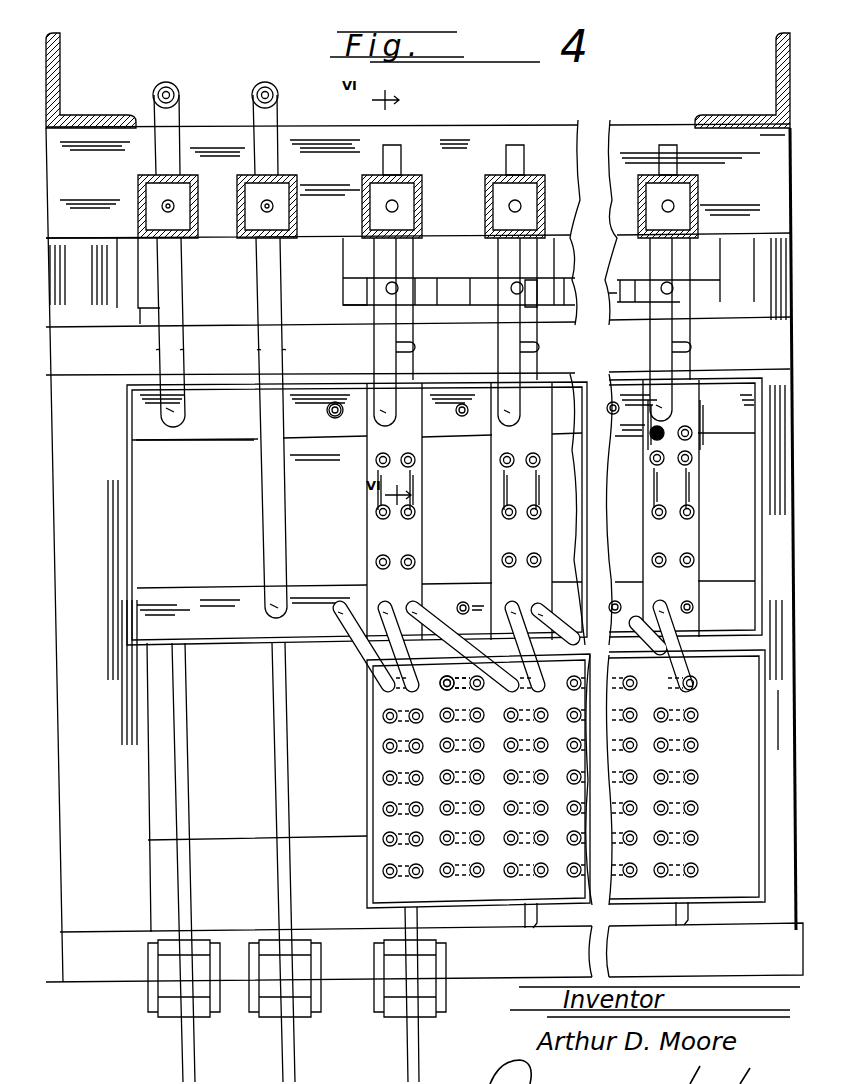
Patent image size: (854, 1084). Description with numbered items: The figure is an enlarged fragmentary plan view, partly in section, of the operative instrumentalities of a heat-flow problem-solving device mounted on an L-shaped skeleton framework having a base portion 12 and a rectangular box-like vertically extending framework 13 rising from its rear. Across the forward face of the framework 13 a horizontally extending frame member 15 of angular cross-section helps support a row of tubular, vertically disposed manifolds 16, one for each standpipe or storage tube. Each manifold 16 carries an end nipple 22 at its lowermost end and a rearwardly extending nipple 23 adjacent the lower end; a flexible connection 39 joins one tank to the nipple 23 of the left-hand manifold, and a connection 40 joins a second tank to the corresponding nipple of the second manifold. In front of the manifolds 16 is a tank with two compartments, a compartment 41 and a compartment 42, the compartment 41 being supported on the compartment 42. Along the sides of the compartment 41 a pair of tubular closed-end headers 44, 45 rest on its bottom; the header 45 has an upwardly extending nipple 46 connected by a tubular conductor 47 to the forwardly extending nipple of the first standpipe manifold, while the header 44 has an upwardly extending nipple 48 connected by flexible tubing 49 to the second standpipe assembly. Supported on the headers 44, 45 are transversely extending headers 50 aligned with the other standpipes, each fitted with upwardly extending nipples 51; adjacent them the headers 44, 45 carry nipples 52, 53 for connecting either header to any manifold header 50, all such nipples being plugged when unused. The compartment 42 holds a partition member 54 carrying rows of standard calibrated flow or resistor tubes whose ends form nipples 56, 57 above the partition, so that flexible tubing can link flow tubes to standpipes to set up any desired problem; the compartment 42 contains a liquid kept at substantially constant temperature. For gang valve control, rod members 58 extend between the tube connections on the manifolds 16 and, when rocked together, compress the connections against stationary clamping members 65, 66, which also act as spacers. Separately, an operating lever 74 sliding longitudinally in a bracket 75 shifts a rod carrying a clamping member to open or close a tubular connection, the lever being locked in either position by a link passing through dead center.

The base portion 12 is at (90, 775).
The vertically extending framework 13 is at (775, 62).
The horizontally extending frame member 15 is at (703, 200).
The manifold 16 is at (138, 180).
The end nipple 22 is at (172, 204).
The rearwardly extending nipple 23 is at (396, 145).
The flexible connection 39 is at (154, 108).
The connection 40 is at (253, 103).
The compartment 41 is at (127, 505).
The compartment 42 is at (375, 762).
The header 44 is at (185, 600).
The header 45 is at (148, 441).
The upwardly extending nipple 46 is at (175, 417).
The tubular conductor 47 is at (162, 333).
The upwardly extending nipple 48 is at (282, 608).
The flexible tubing 49 is at (287, 505).
The transversely extending header 50 is at (367, 526).
The upwardly extending nipple 51 is at (376, 461).
The upwardly extending nipple 52 is at (345, 605).
The upwardly extending nipple 53 is at (333, 402).
The partition member 54 is at (755, 740).
The nipple 56 is at (452, 688).
The nipple 57 is at (485, 688).
The rod member 58 is at (398, 285).
The stationary clamping member 65 is at (345, 288).
The stationary clamping member 66 is at (548, 272).
The operating lever 74 is at (188, 787).
The bracket 75 is at (395, 347).